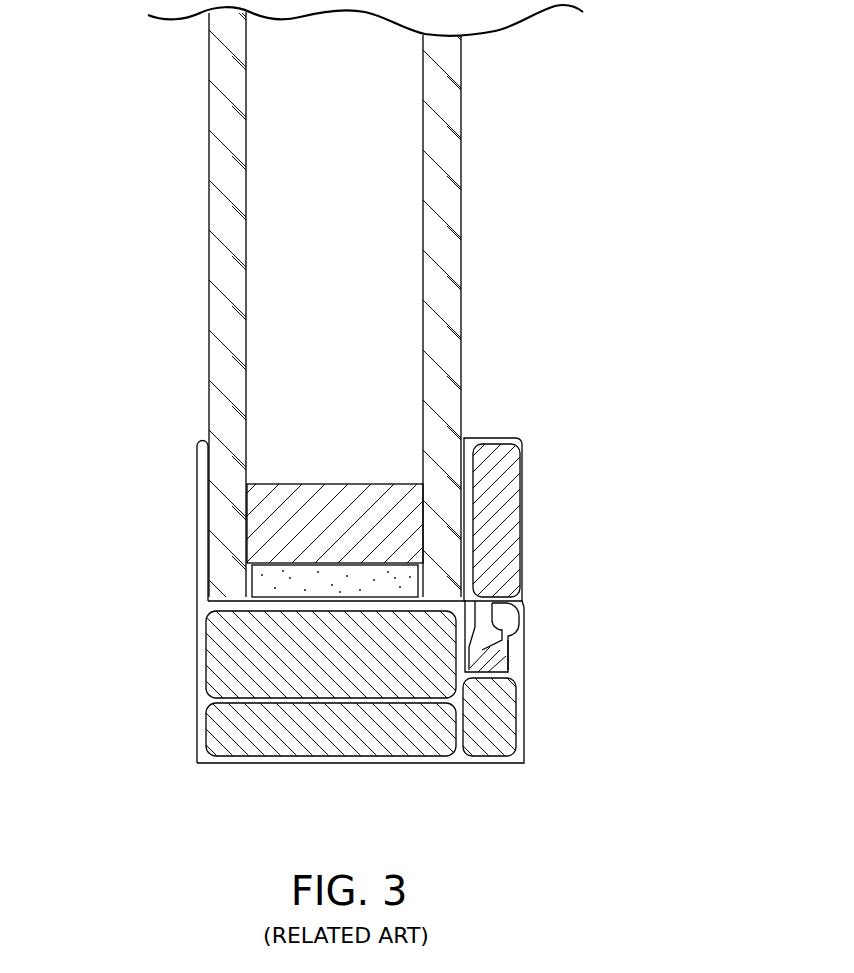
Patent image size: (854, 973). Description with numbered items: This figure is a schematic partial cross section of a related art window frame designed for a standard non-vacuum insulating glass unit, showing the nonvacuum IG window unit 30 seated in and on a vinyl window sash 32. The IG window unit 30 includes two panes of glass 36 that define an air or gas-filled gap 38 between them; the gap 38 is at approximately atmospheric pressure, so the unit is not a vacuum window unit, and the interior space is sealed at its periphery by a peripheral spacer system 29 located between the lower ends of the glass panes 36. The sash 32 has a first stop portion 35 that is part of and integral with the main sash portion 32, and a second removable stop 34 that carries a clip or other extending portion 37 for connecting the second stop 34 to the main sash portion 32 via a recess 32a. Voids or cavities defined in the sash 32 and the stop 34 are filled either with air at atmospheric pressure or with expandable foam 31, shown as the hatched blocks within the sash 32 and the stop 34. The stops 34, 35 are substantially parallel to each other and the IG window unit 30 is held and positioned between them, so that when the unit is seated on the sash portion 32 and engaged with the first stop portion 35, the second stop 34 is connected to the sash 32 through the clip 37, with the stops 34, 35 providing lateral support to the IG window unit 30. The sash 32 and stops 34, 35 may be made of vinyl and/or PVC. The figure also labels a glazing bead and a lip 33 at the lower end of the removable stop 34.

The peripheral spacer system 29 is at (287, 537).
The nonvacuum IG window unit 30 is at (548, 128).
The expandable foam 31 is at (496, 546).
The window sash 32 is at (264, 683).
The recess 32a is at (490, 668).
The glazing bead lip 33 is at (523, 601).
The second removable stop 34 is at (527, 511).
The first stop portion 35 is at (203, 474).
The panes of glass 36 is at (230, 258).
The clip 37 is at (477, 657).
The gap 38 is at (363, 232).